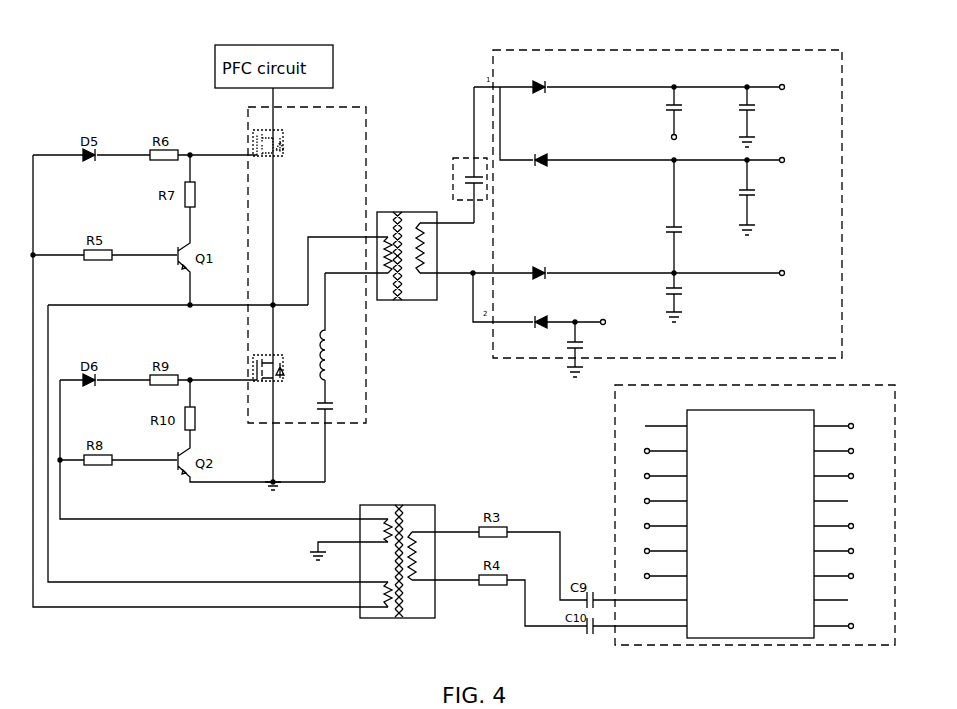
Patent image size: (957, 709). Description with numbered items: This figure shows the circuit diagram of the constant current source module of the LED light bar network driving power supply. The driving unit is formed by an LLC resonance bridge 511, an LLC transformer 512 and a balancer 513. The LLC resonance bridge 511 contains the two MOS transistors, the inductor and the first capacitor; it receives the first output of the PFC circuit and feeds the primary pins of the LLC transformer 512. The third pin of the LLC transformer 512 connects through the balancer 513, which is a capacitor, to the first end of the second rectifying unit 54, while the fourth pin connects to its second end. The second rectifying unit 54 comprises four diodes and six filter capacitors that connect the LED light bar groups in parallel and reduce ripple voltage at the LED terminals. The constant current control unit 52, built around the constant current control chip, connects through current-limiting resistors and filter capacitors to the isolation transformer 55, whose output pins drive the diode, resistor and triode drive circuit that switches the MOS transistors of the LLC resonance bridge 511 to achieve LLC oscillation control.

The LLC resonance bridge 511 is at (347, 106).
The LLC transformer 512 is at (397, 212).
The balancer 513 is at (455, 167).
The second rectifying unit 54 is at (842, 118).
The constant current control unit 52 is at (842, 386).
The isolation transformer 55 is at (383, 505).